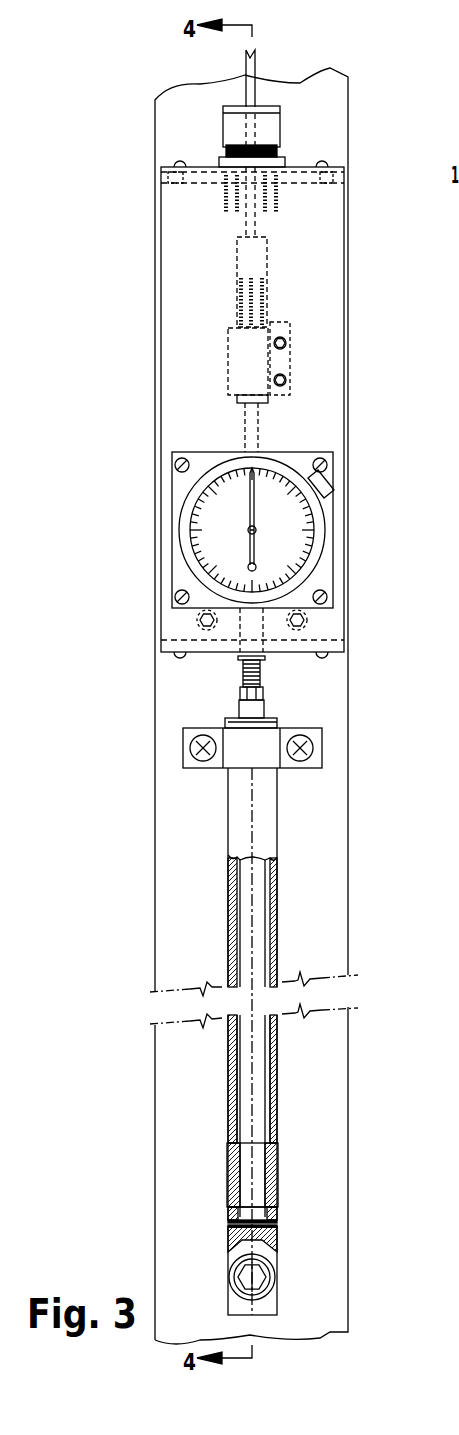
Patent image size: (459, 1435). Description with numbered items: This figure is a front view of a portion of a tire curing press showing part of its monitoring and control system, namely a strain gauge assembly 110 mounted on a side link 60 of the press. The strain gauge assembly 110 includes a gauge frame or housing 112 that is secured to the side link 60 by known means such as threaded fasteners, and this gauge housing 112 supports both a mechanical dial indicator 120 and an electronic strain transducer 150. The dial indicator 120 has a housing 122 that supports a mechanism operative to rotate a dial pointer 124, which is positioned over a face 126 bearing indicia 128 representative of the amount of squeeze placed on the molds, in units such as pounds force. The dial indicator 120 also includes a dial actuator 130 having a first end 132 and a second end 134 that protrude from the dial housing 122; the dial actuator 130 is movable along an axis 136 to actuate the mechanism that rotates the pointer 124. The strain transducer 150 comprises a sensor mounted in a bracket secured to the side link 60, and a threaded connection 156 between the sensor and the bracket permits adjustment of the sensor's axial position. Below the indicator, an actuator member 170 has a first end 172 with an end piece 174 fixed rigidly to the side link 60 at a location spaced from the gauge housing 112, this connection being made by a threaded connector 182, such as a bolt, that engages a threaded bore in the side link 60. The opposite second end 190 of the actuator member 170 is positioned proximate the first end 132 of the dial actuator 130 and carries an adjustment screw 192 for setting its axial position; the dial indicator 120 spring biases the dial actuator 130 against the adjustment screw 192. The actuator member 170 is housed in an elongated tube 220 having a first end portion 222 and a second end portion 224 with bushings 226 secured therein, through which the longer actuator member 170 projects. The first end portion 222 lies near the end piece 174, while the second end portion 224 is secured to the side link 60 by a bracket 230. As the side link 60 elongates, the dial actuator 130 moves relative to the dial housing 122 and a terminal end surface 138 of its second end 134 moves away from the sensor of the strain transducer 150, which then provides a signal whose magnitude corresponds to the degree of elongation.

The side link 60 is at (310, 112).
The strain gauge assembly 110 is at (95, 257).
The gauge housing 112 is at (330, 328).
The mechanical dial indicator 120 is at (229, 509).
The dial housing 122 is at (180, 575).
The dial pointer 124 is at (255, 515).
The face 126 is at (228, 497).
The indicia 128 is at (315, 560).
The dial actuator 130 is at (240, 622).
The first end of the dial actuator 132 is at (238, 658).
The second end of the dial actuator 134 is at (268, 420).
The axis 136 is at (255, 807).
The terminal end surface 138 is at (237, 392).
The electronic strain transducer 150 is at (195, 344).
The threaded connection 156 is at (267, 300).
The actuator member 170 is at (258, 940).
The first end of the actuator member 172 is at (257, 1193).
The end piece 174 is at (266, 1310).
The threaded connector 182 is at (260, 1272).
The second end of the actuator member 190 is at (265, 702).
The adjustment screw 192 is at (262, 675).
The tube 220 is at (262, 840).
The first end portion of the tube 222 is at (240, 1147).
The second end portion of the tube 224 is at (242, 780).
The bushings 226 is at (233, 718).
The bracket 230 is at (243, 752).